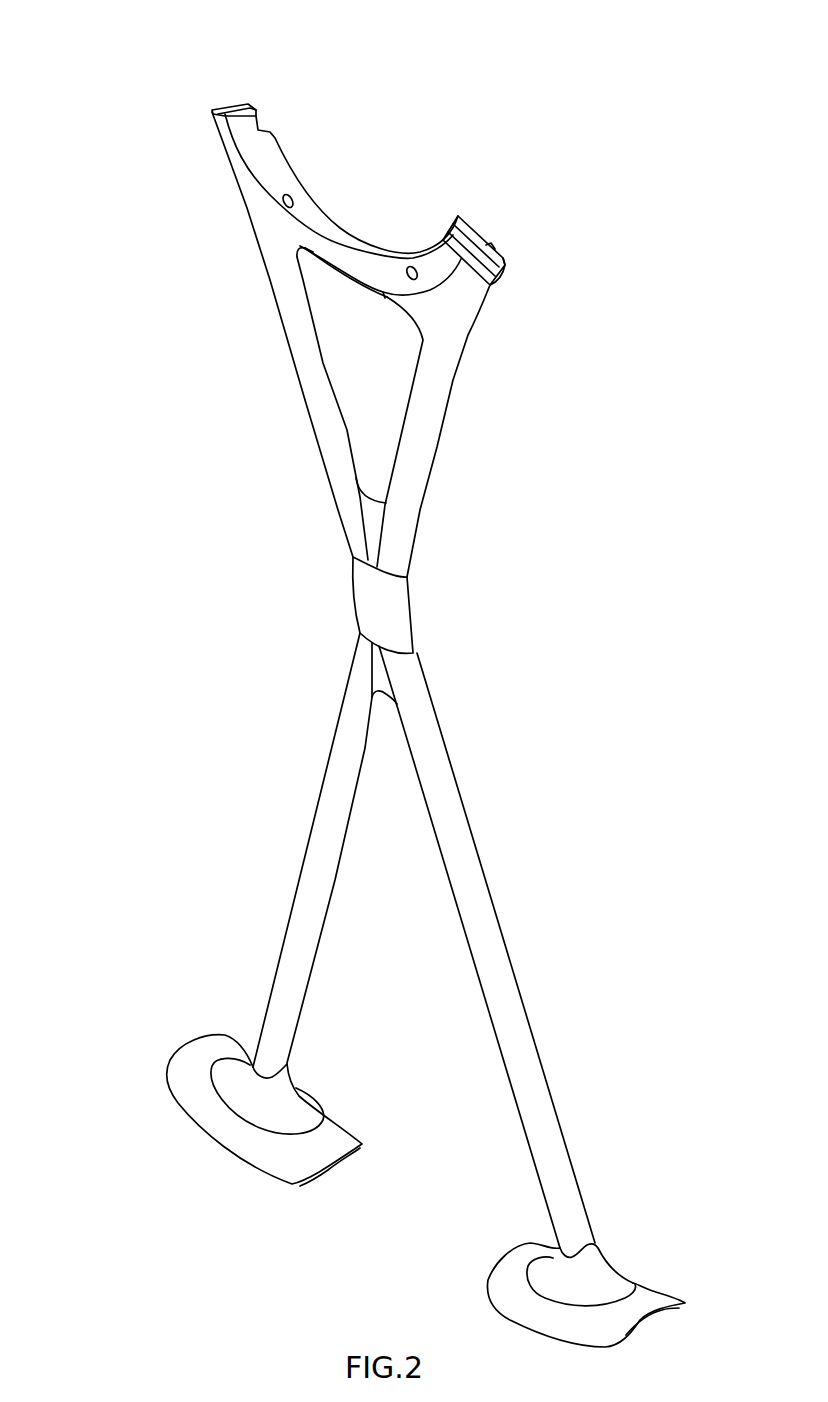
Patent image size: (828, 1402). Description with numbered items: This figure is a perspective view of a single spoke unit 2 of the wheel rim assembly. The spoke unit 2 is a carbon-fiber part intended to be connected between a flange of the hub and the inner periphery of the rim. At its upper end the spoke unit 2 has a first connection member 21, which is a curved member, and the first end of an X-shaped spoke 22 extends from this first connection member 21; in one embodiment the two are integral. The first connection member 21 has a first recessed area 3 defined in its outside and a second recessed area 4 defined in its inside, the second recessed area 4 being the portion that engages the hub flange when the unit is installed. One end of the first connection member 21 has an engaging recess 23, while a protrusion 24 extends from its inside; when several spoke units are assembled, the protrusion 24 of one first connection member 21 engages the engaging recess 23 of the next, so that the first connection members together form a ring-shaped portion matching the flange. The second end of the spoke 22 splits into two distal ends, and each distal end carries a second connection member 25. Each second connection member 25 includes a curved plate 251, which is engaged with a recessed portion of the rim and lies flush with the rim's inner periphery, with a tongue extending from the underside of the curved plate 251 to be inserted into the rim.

The spoke unit 2 is at (567, 398).
The first connection member 21 is at (528, 114).
The spoke 22 is at (405, 627).
The engaging recess 23 is at (446, 231).
The protrusion 24 is at (257, 113).
The second connection member 25 is at (198, 1025).
The curved plate 251 is at (176, 1067).
The first recessed area 3 is at (258, 158).
The second recessed area 4 is at (492, 245).